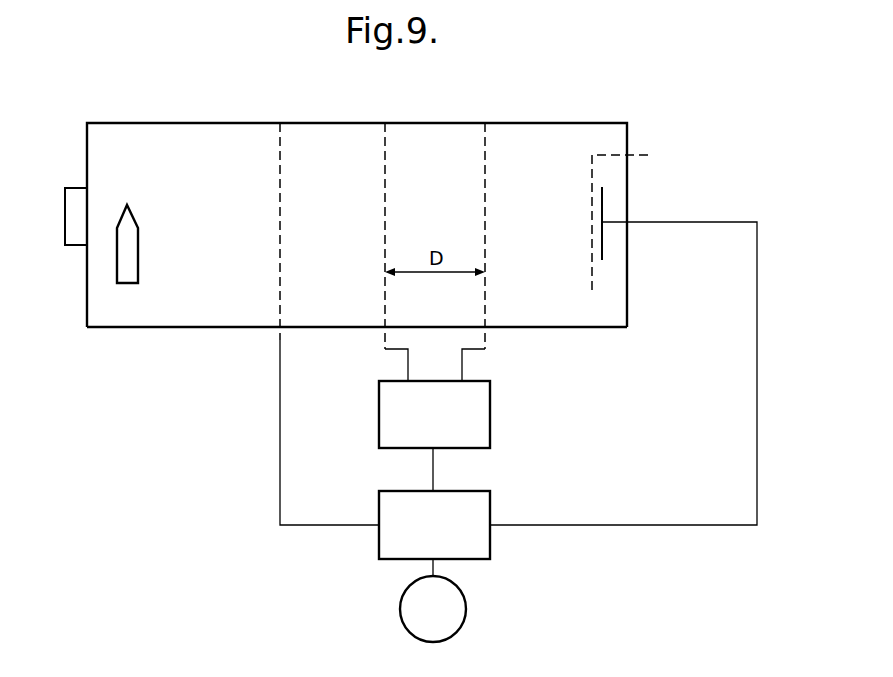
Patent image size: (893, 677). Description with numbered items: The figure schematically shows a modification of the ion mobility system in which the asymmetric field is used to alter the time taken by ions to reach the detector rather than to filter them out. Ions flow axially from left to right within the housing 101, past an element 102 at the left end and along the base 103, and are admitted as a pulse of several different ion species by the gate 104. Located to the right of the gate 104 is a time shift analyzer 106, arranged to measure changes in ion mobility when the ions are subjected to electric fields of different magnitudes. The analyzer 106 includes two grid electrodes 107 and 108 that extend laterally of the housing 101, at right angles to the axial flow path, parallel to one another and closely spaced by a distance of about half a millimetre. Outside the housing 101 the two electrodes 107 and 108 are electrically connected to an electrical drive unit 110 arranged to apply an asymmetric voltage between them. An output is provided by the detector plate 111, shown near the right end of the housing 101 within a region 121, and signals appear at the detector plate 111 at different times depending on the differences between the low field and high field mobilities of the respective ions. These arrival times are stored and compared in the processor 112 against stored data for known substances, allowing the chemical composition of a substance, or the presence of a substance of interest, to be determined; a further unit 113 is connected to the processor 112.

The housing 101 is at (583, 123).
The connector 102 is at (77, 248).
The base wall 103 is at (136, 317).
The gate 104 is at (278, 143).
The time shift analyzer 106 is at (457, 146).
The grid electrode 107 is at (385, 147).
The grid electrode 108 is at (485, 148).
The electrical drive unit 110 is at (490, 413).
The detector plate 111 is at (602, 203).
The processor 112 is at (490, 504).
The alarm 113 is at (467, 608).
The sensor region 121 is at (640, 217).